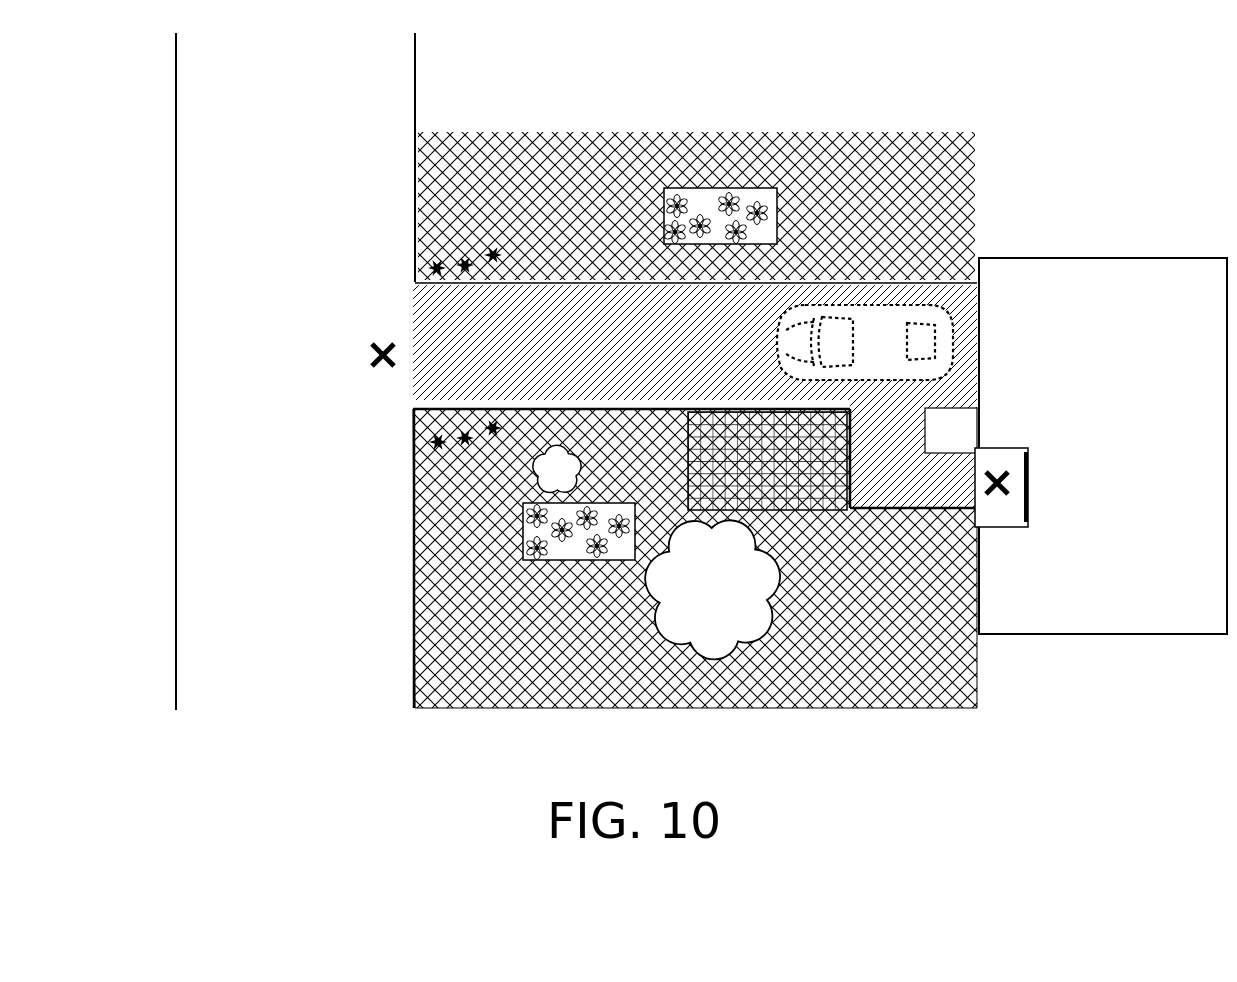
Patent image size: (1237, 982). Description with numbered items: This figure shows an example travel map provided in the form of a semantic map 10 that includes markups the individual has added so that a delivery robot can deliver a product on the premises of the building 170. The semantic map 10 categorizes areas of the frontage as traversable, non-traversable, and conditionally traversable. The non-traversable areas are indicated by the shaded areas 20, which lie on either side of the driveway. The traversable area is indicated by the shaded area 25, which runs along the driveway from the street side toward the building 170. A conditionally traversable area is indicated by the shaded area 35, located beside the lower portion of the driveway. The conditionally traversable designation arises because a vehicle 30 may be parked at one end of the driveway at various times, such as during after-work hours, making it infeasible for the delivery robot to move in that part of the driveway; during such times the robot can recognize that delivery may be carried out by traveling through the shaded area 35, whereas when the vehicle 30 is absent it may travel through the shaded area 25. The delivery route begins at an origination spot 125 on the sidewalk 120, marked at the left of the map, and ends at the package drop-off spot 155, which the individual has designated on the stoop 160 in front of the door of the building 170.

The semantic map 10 is at (1146, 93).
The shaded areas 20 is at (558, 212).
The shaded area 25 is at (638, 354).
The vehicle 30 is at (877, 294).
The shaded area 35 is at (761, 469).
The sidewalk 120 is at (271, 104).
The origination spot 125 is at (381, 376).
The package drop-off spot 155 is at (1002, 463).
The stoop 160 is at (1000, 527).
The building 170 is at (1121, 540).